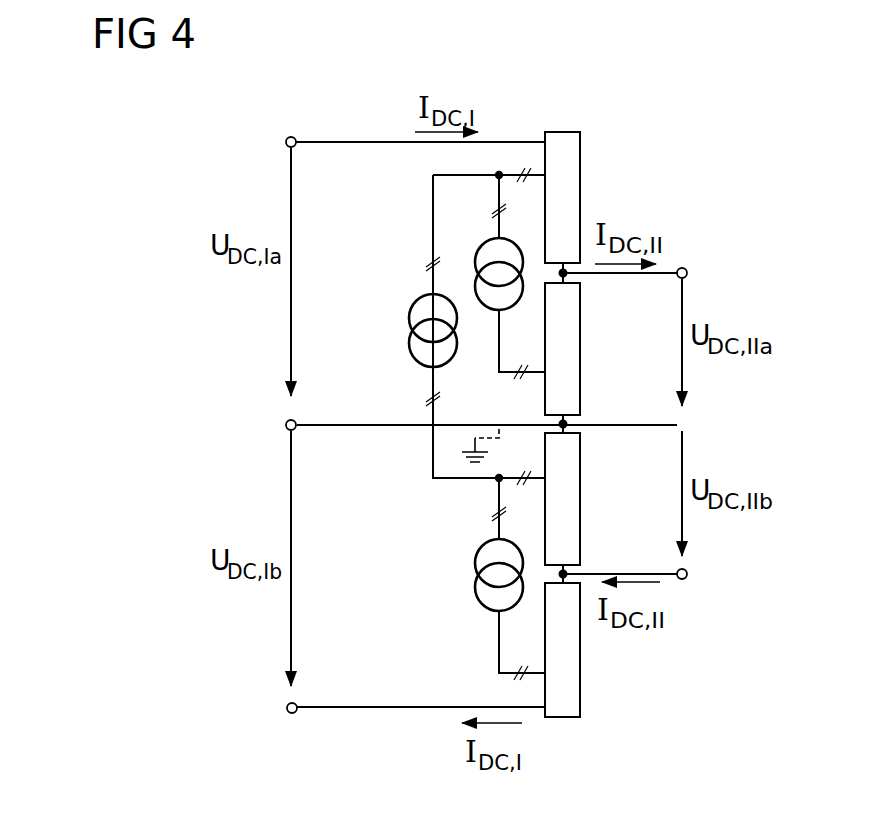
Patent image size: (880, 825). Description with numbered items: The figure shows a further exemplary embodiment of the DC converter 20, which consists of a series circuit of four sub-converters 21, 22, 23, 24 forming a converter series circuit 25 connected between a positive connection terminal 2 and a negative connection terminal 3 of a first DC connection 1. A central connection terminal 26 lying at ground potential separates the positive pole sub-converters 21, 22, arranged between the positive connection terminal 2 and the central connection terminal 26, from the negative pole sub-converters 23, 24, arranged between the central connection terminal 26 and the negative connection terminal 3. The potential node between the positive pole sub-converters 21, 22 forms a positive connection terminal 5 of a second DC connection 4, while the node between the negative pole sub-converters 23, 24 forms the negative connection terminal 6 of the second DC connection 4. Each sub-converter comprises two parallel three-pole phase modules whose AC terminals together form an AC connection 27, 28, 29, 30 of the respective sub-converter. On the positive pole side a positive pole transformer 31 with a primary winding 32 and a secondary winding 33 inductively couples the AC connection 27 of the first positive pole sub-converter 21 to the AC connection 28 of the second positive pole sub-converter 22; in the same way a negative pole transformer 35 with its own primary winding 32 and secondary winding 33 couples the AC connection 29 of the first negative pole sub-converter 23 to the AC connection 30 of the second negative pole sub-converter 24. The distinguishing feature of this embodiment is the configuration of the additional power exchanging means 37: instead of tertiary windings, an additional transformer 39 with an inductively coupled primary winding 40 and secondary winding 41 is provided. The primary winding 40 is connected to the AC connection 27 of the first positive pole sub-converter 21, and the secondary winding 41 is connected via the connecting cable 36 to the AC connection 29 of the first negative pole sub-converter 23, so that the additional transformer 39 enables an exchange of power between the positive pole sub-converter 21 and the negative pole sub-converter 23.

The first DC connection 1 is at (98, 484).
The positive connection terminal 2 is at (305, 142).
The negative connection terminal 3 is at (296, 714).
The second DC connection 4 is at (760, 572).
The positive connection terminal of the second DC connection 5 is at (684, 265).
The fourth DC terminal 6 is at (683, 583).
The DC converter 20 is at (733, 187).
The first positive pole sub-converter 21 is at (582, 176).
The second positive pole sub-converter 22 is at (582, 328).
The first negative pole sub-converter 23 is at (582, 491).
The second negative pole sub-converter 24 is at (582, 660).
The converter series circuit 25 is at (606, 148).
The central connection terminal 26 is at (285, 425).
The AC connection of the first positive pole sub-converter 27 is at (527, 170).
The AC connection of the second positive pole sub-converter 28 is at (520, 370).
The AC connection of the first negative pole sub-converter 29 is at (520, 482).
The AC connection of the second negative pole sub-converter 30 is at (518, 670).
The positive pole transformer 31 is at (468, 248).
The primary winding 32 is at (488, 246).
The secondary winding 33 is at (492, 312).
The negative pole transformer 35 is at (455, 574).
The connecting cable 36 is at (433, 455).
The additional power exchanging means 37 is at (255, 365).
The additional transformer 39 is at (388, 338).
The primary winding of the additional transformer 40 is at (418, 301).
The secondary winding of the additional transformer 41 is at (415, 361).